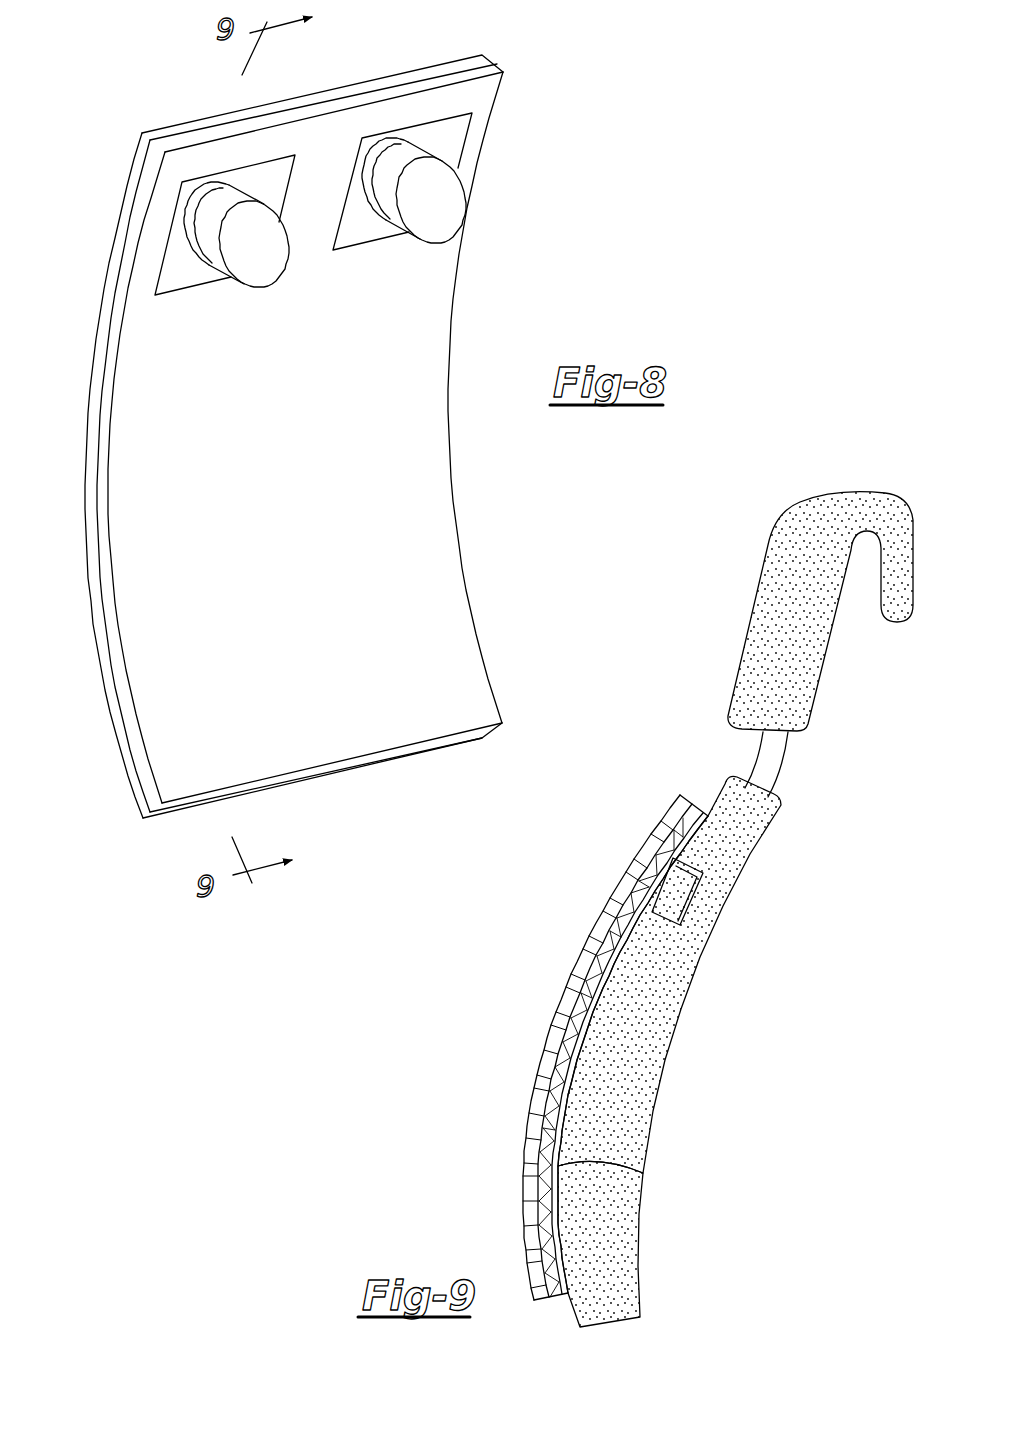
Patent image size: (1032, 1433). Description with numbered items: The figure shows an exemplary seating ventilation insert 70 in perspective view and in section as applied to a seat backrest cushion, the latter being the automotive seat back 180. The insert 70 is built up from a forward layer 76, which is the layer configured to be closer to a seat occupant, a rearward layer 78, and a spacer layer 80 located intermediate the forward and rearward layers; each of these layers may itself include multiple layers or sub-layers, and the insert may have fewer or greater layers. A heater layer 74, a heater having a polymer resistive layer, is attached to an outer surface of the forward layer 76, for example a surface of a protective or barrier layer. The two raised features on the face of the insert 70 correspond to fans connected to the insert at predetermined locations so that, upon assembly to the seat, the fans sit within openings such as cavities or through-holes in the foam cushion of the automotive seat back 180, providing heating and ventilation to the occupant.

In FIG. 8, the ventilation insert 70 is at (530, 198).
In FIG. 9, the ventilation insert 70 is at (485, 985).
In FIG. 8, the heater layer 74 is at (118, 237).
In FIG. 9, the heater layer 74 is at (598, 944).
In FIG. 8, the forward layer 76 is at (108, 308).
In FIG. 9, the forward layer 76 is at (553, 1065).
In FIG. 8, the rearward layer 78 is at (303, 530).
In FIG. 9, the rearward layer 78 is at (643, 1173).
In FIG. 8, the spacer layer 80 is at (110, 382).
In FIG. 9, the spacer layer 80 is at (548, 1158).
In FIG. 9, the automotive seat back 180 is at (657, 1087).